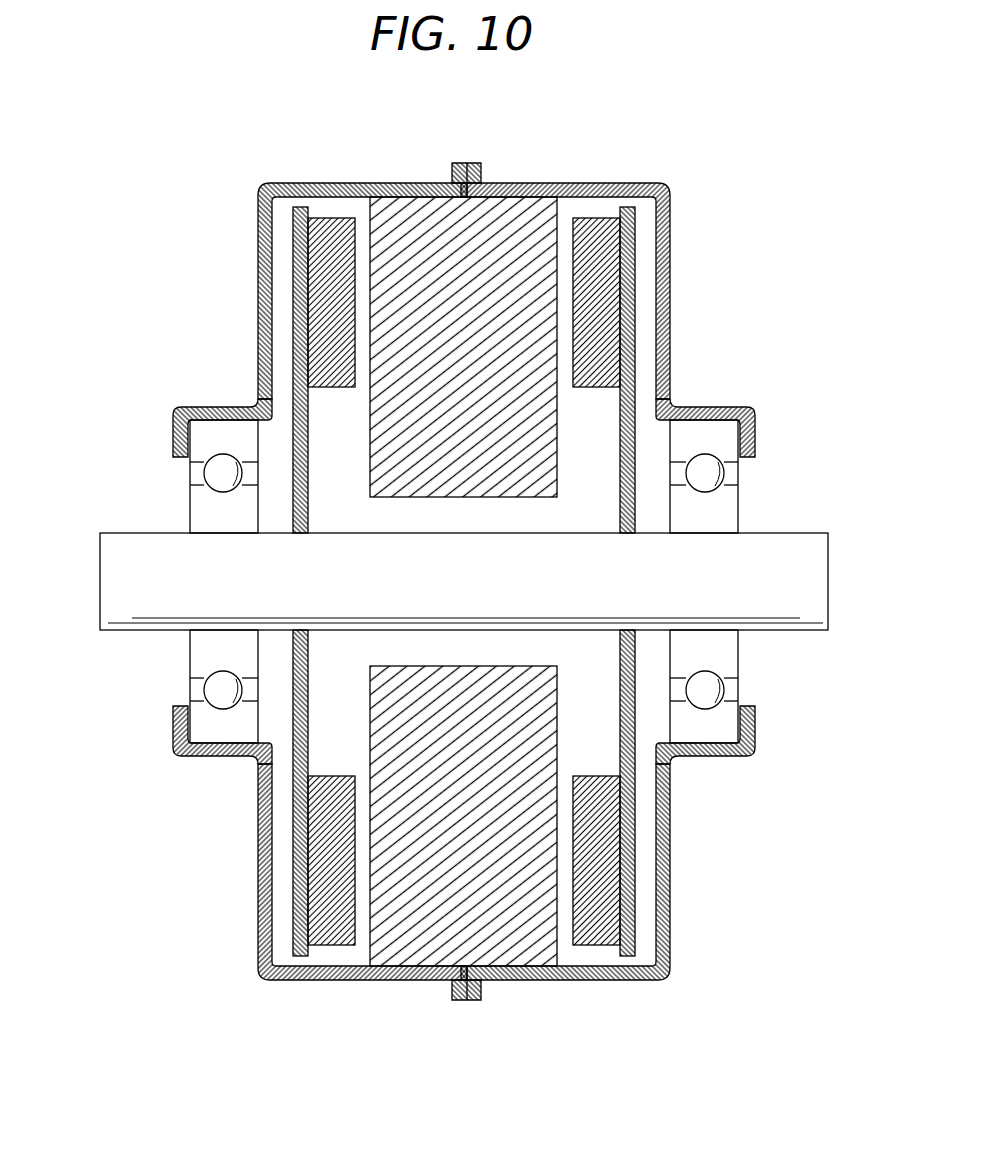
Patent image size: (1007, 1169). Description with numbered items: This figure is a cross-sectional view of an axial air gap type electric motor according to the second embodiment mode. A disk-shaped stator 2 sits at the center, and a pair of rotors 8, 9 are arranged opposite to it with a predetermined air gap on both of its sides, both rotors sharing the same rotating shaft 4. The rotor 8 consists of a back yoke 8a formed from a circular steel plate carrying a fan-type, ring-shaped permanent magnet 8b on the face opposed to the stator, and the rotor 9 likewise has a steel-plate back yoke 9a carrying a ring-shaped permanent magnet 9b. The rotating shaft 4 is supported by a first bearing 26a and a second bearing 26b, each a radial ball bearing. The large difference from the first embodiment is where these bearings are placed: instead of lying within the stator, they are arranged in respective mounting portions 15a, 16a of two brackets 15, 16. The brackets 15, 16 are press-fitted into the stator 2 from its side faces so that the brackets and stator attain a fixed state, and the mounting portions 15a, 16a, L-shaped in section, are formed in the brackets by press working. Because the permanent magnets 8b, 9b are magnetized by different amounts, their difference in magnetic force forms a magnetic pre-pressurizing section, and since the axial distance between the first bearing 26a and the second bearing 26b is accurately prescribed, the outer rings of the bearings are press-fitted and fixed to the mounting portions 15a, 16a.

The stator 2 is at (509, 197).
The rotating shaft 4 is at (822, 572).
The rotor 8 is at (283, 831).
The back yoke 8a is at (303, 263).
The permanent magnet 8b is at (320, 315).
The rotor 9 is at (645, 831).
The back yoke 9a is at (628, 258).
The permanent magnet 9b is at (605, 312).
The bracket 15 is at (258, 212).
The mounting portion 15a is at (178, 399).
The bracket 16 is at (670, 208).
The mounting portion 16a is at (750, 399).
The first bearing 26a is at (170, 489).
The second bearing 26b is at (758, 486).